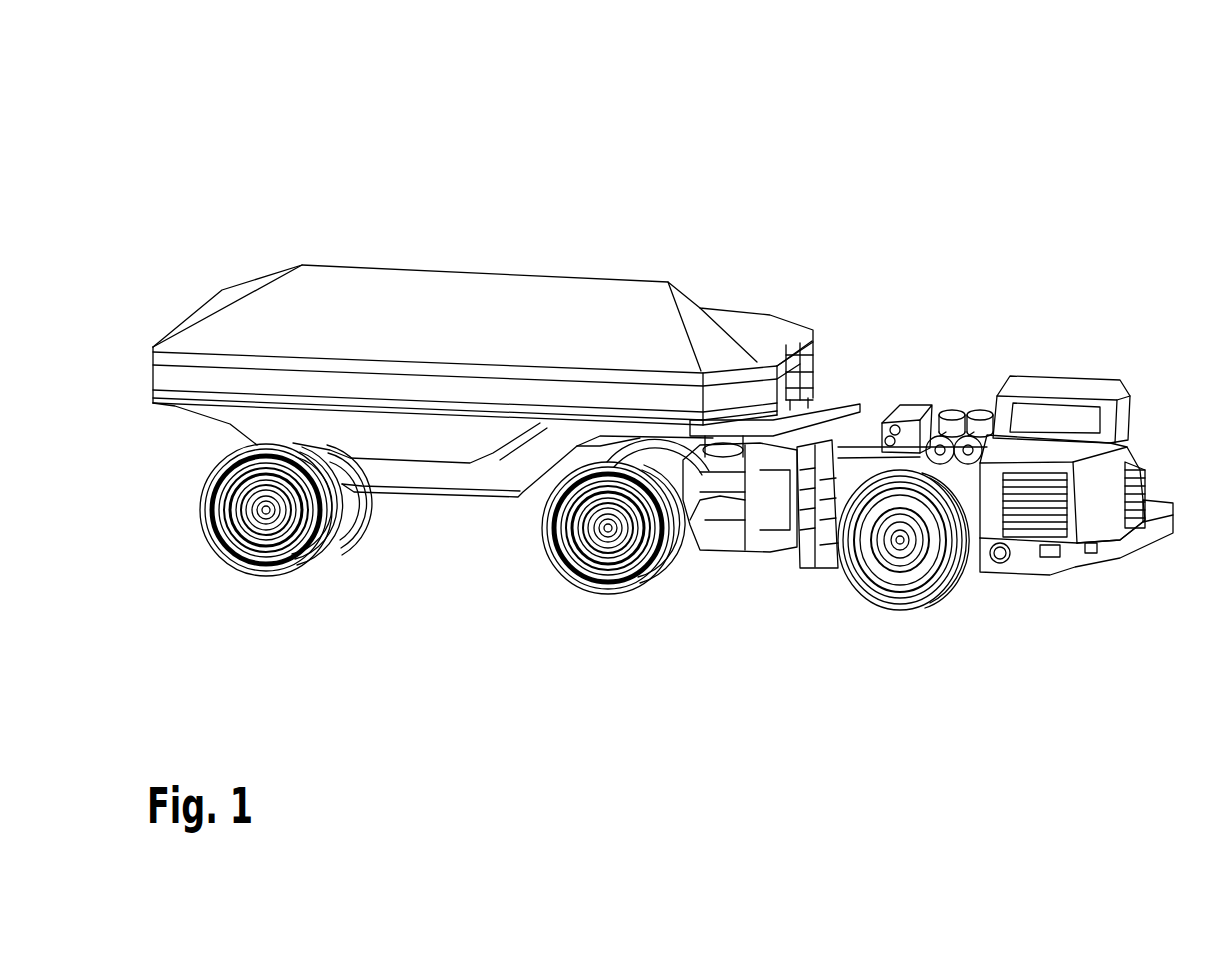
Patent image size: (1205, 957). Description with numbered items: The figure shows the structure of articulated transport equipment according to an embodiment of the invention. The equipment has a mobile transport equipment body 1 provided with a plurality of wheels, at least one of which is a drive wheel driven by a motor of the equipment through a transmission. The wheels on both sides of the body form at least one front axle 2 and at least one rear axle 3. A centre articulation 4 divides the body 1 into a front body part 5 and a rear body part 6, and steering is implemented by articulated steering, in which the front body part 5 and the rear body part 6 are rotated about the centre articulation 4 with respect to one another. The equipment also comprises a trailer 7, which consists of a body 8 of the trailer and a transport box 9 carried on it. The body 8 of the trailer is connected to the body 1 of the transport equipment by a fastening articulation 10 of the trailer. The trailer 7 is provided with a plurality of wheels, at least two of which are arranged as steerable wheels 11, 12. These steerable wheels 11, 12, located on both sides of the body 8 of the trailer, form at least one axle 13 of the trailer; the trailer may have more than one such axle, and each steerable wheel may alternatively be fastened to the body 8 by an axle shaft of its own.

The transport equipment body 1 is at (950, 410).
The front axle 2 is at (903, 570).
The rear axle 3 is at (612, 572).
The centre articulation 4 is at (827, 437).
The front body part 5 is at (1037, 570).
The rear body part 6 is at (735, 553).
The trailer 7 is at (480, 292).
The body of the trailer 8 is at (455, 497).
The transport box 9 is at (793, 323).
The fastening articulation 10 is at (760, 437).
The steerable wheel 11 is at (367, 493).
The steerable wheel 12 is at (318, 540).
The axle of the trailer 13 is at (273, 553).